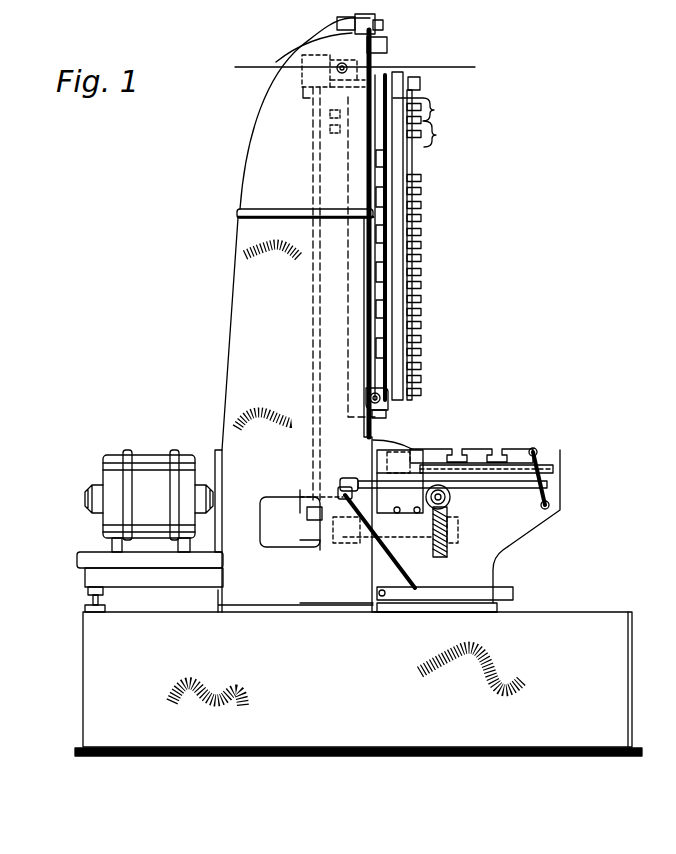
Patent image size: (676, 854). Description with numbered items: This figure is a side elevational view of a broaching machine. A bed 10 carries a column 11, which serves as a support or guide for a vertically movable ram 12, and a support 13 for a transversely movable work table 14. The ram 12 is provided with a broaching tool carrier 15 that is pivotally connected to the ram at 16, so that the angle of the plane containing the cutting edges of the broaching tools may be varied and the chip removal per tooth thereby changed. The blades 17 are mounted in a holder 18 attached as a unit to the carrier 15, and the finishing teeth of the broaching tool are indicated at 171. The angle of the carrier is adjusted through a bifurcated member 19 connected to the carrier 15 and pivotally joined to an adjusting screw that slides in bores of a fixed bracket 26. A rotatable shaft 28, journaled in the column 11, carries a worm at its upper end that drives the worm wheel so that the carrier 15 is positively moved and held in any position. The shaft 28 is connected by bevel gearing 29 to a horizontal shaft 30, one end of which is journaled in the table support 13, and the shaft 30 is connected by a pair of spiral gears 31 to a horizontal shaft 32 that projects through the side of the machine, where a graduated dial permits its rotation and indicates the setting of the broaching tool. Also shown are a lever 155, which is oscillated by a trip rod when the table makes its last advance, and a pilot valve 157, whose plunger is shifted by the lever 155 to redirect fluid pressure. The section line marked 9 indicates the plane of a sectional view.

The section line 9- 9 is at (240, 55).
The bed 10 is at (634, 648).
The column 11 is at (231, 289).
The ram 12 is at (381, 102).
The support 13 is at (523, 535).
The work table 14 is at (478, 447).
The broaching tool carrier 15 is at (423, 110).
The pivotal connection 16 is at (388, 414).
The blades 17 is at (421, 284).
The finishing teeth 171 is at (436, 130).
The holder 18 is at (390, 400).
The bifurcated member 19 is at (382, 78).
The fixed bracket 26 is at (303, 98).
The rotatable shaft 28 is at (319, 335).
The bevel gearing 29 is at (333, 544).
The horizontal shaft 30 is at (420, 540).
The spiral gears 31 is at (462, 517).
The horizontal shaft 32 is at (452, 499).
The lever 155 is at (377, 474).
The pilot valve 157 is at (403, 497).